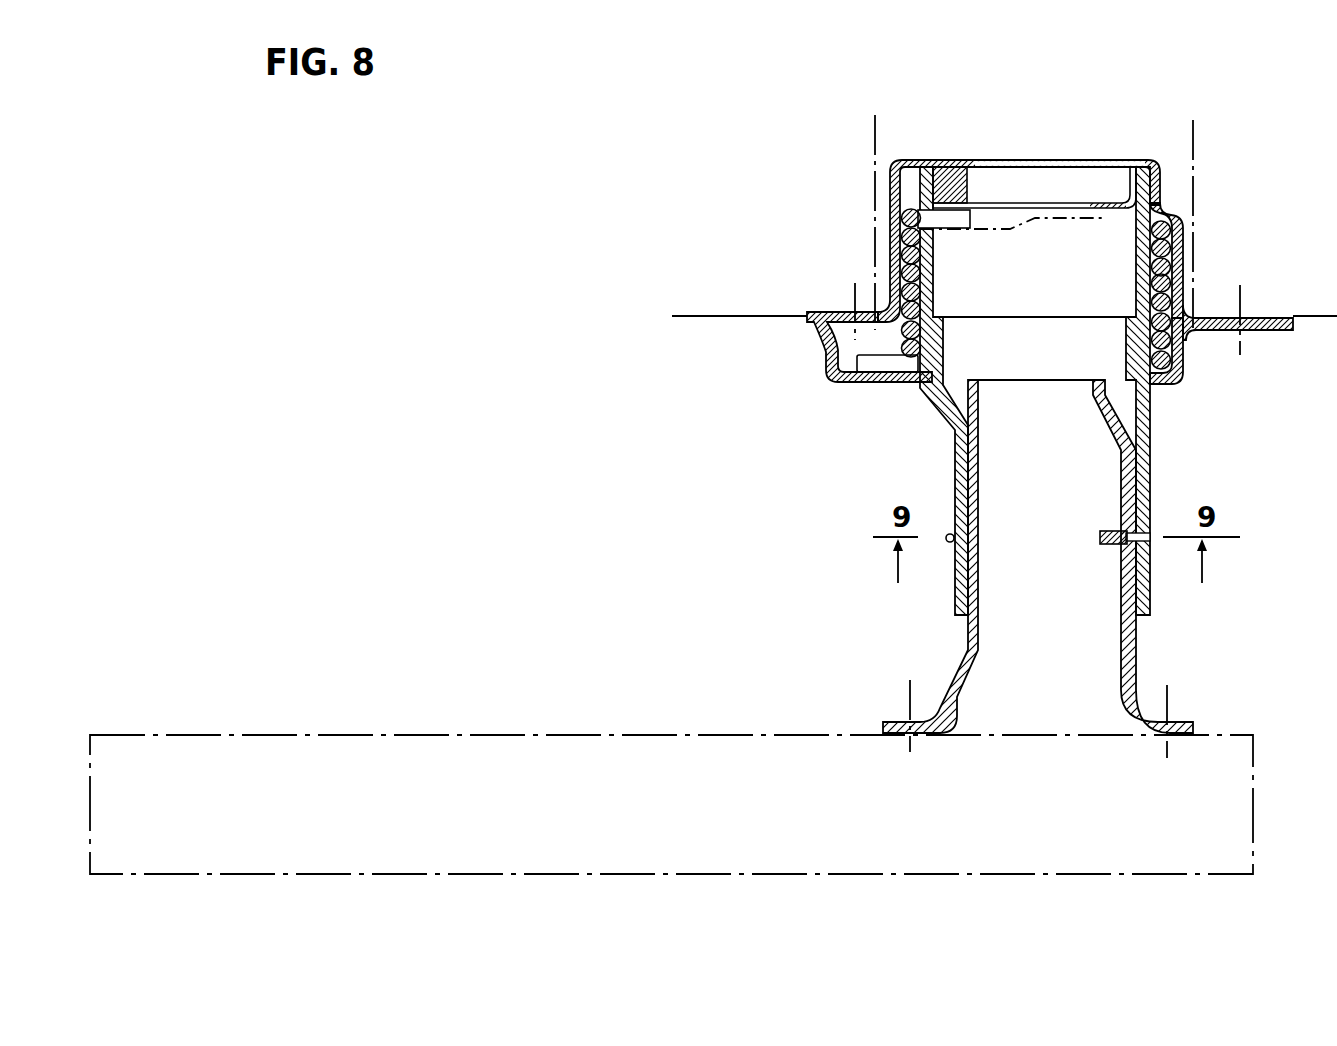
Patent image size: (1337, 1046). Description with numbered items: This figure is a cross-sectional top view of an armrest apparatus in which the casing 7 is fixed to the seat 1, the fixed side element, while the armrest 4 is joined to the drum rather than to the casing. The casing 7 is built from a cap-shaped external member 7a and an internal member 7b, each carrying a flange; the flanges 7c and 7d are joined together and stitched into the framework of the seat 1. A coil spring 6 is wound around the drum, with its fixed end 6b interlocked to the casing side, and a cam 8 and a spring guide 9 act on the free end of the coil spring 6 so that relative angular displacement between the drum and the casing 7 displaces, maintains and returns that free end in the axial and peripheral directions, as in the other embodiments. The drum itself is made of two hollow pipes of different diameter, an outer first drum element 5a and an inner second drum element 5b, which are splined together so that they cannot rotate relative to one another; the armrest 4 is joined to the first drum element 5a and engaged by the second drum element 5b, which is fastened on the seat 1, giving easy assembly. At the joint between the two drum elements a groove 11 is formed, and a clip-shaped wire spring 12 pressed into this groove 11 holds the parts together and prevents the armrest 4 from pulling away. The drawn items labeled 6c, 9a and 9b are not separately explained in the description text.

The seat 1 is at (782, 303).
The armrest 4 is at (693, 747).
The first drum element 5a is at (933, 276).
The second drum element 5b is at (1150, 435).
The coil spring 6 is at (908, 288).
The fixed end 6b is at (882, 367).
The lip of seal member 6c is at (950, 221).
The casing 7 is at (1182, 213).
The external member 7a is at (1178, 357).
The internal member 7b is at (1182, 260).
The flange 7c is at (1281, 331).
The flange 7d is at (1284, 318).
The cam 8 is at (1012, 218).
The spring guide 9 is at (1019, 194).
The inner cap member 9a is at (983, 177).
The outer cap member 9b is at (960, 177).
The groove 11 is at (1141, 540).
The wire spring 12 is at (1137, 528).